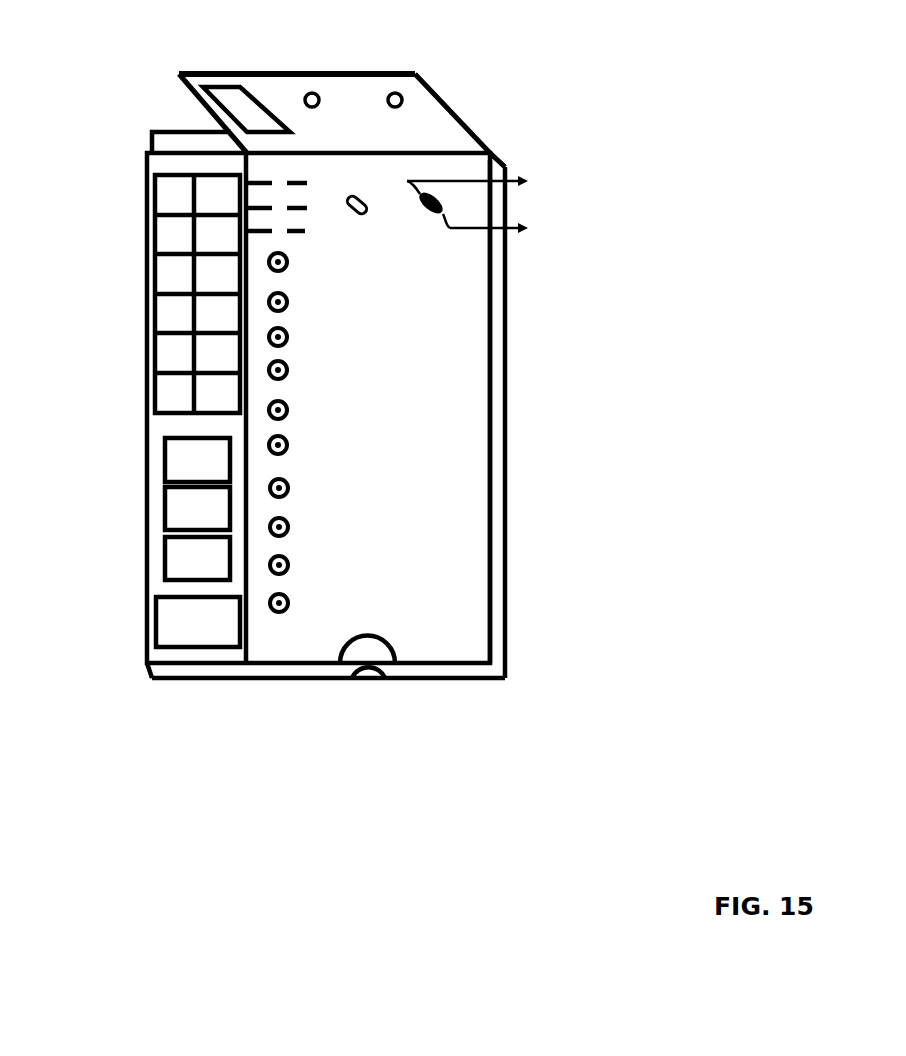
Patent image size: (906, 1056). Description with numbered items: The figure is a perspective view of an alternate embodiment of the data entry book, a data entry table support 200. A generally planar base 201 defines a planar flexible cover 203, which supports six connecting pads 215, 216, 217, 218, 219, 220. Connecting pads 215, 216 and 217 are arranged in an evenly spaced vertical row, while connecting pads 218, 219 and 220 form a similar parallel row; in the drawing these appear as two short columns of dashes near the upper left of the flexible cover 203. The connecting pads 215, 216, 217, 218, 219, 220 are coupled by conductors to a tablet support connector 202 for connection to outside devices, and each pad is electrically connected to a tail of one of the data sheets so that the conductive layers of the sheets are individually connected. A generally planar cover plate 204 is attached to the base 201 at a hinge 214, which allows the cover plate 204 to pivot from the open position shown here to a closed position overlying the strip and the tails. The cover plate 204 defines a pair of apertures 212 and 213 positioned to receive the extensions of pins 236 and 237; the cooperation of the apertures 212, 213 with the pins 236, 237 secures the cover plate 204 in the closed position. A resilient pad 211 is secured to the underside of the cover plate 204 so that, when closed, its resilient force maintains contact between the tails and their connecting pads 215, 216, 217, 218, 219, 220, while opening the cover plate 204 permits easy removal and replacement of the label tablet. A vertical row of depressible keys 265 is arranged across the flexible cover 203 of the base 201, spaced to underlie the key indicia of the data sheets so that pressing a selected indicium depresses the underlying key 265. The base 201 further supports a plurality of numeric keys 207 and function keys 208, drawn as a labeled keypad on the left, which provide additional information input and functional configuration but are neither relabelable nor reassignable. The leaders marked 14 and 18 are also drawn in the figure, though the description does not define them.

The data entry table support 200 is at (480, 757).
The base 201 is at (494, 532).
The tablet support connector 202 is at (152, 128).
The flexible cover 203 is at (475, 484).
The cover plate 204 is at (433, 90).
The numeric keys 207 is at (146, 268).
The function keys 208 is at (165, 461).
The resilient pad 211 is at (226, 76).
The aperture 212 is at (312, 91).
The aperture 213 is at (395, 91).
The hinge 214 is at (490, 150).
The connecting pad 215 is at (267, 183).
The connecting pad 216 is at (260, 212).
The connecting pad 217 is at (256, 234).
The connecting pad 218 is at (305, 184).
The connecting pad 219 is at (303, 208).
The connecting pad 220 is at (305, 231).
The pin 236 is at (370, 203).
The pin 237 is at (440, 217).
The depressible keys 265 is at (288, 486).
The connection leads 14 is at (491, 211).
The connection leads 18 is at (278, 432).